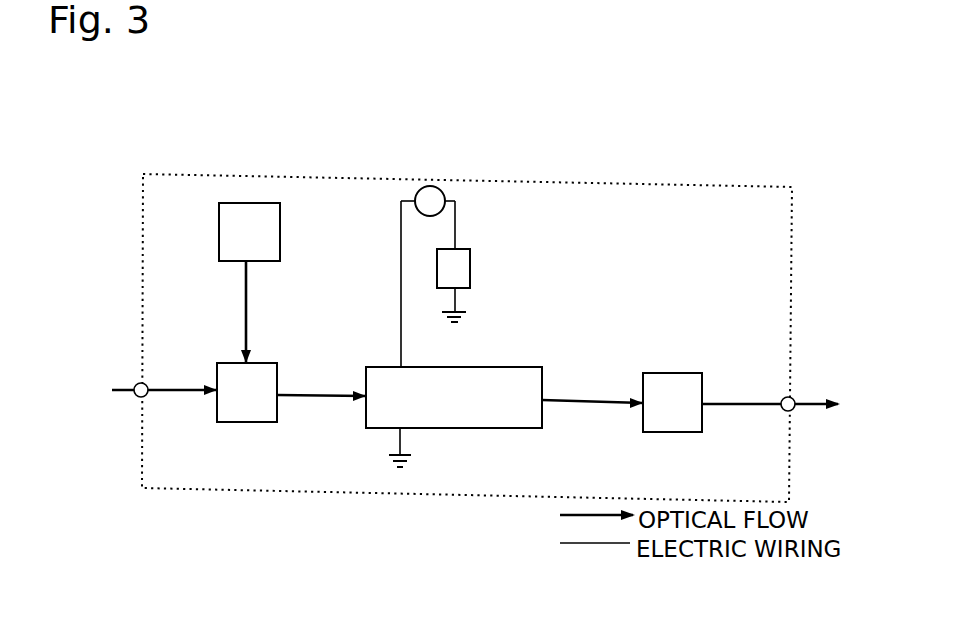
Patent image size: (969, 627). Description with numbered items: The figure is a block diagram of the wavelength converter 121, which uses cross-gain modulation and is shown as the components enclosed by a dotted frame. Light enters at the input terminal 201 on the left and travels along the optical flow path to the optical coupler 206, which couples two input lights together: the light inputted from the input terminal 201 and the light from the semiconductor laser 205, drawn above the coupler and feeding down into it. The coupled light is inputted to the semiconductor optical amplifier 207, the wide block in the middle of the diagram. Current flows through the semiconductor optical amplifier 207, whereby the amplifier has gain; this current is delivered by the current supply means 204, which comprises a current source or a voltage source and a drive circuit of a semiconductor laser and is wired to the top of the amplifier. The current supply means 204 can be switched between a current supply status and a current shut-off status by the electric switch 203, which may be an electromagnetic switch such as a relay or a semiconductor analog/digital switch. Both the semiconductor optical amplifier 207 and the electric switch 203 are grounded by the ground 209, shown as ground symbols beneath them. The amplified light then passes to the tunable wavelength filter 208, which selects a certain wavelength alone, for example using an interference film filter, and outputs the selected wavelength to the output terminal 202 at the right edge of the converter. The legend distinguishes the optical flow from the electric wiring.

The wavelength converter 121 is at (791, 470).
The input terminal 201 is at (138, 384).
The output terminal 202 is at (788, 397).
The electric switch 203 is at (460, 249).
The current supply means 204 is at (430, 186).
The semiconductor laser 205 is at (240, 203).
The optical coupler 206 is at (240, 422).
The semiconductor optical amplifier 207 is at (475, 367).
The tunable wavelength filter 208 is at (673, 373).
The ground 209 is at (450, 330).